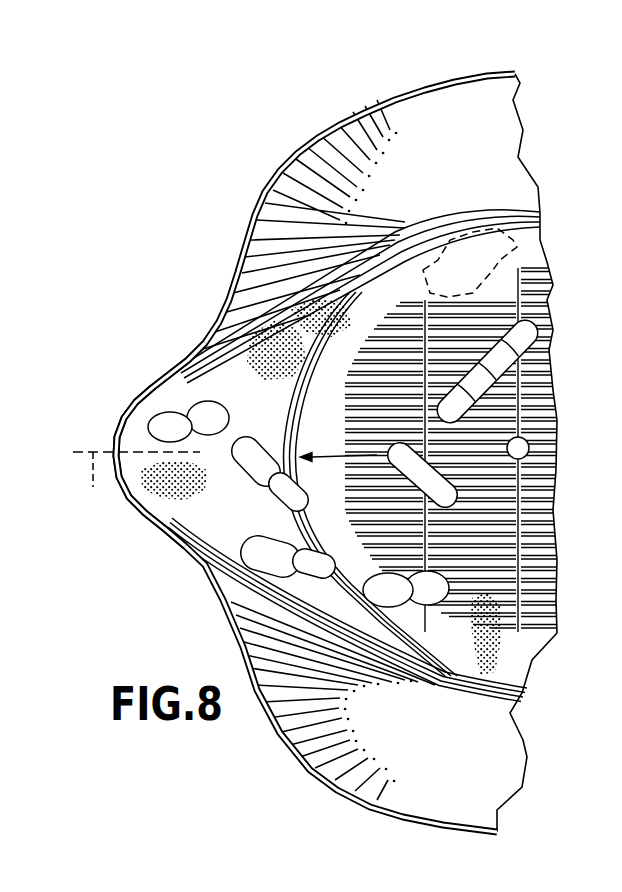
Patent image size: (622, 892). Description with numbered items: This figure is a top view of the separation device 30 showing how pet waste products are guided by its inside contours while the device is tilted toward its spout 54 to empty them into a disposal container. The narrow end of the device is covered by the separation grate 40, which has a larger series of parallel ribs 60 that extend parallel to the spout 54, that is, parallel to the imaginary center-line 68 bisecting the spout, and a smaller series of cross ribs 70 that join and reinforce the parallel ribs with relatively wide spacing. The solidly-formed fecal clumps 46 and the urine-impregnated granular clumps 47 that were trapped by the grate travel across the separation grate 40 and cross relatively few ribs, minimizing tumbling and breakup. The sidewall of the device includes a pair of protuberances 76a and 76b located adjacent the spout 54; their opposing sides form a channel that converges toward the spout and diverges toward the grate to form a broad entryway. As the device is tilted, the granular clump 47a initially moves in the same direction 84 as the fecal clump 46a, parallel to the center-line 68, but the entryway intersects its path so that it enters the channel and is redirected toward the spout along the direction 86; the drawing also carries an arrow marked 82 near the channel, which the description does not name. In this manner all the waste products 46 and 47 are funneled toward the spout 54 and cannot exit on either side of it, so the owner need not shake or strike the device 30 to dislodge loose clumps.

The separation device 30 is at (313, 119).
The separation grate 40 is at (471, 625).
The fecal clumps 46 is at (213, 553).
The fecal clump 46a is at (240, 477).
The granular clumps 47 is at (173, 497).
The granular clump 47a is at (518, 245).
The spout 54 is at (132, 398).
The ribs 60 is at (545, 327).
The center-line 68 is at (136, 482).
The cross ribs 70 is at (540, 617).
The protuberance 76a is at (261, 304).
The protuberance 76b is at (261, 599).
The inner channel wall 82 is at (302, 427).
The direction 84 is at (320, 462).
The direction 86 is at (352, 312).